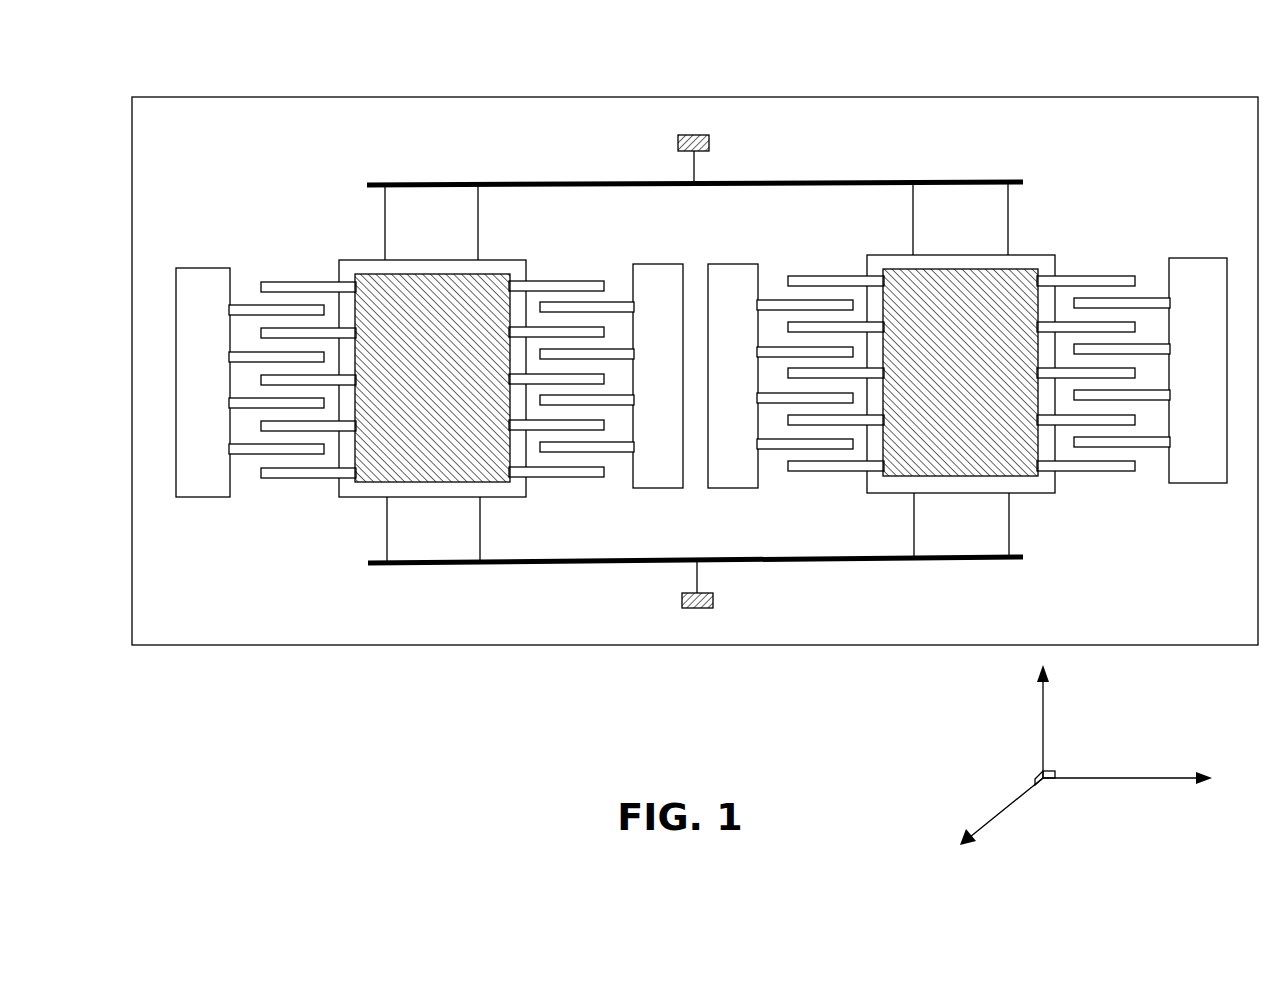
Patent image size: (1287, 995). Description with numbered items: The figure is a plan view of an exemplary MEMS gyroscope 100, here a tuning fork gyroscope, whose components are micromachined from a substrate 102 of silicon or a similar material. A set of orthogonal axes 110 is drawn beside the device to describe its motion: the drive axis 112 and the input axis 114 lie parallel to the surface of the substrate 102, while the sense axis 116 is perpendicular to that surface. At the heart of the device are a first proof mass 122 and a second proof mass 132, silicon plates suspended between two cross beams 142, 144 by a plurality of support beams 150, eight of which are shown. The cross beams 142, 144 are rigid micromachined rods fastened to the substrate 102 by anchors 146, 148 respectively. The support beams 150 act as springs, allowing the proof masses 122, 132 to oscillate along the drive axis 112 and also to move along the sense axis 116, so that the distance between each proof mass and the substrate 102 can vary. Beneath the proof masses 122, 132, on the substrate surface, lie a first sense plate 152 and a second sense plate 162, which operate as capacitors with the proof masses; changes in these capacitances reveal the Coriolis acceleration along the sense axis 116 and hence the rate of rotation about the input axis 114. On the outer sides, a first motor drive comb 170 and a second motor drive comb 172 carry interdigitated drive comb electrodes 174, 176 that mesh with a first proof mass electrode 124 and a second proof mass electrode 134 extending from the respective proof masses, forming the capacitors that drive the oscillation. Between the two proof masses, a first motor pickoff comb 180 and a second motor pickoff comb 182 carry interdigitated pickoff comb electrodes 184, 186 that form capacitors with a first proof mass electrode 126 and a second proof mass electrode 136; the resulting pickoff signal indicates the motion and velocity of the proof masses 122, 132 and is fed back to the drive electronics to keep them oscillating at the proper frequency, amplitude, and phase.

The MEMS gyroscope 100 is at (224, 76).
The substrate 102 is at (236, 172).
The set of orthogonal axes 110 is at (1061, 766).
The drive axis 112 is at (1176, 778).
The input axis 114 is at (1043, 705).
The sense axis 116 is at (1000, 812).
The first proof mass 122 is at (371, 282).
The first proof mass electrode 124 is at (302, 500).
The first proof mass electrode 126 is at (581, 492).
The second proof mass 132 is at (1009, 277).
The second proof mass electrode 134 is at (1108, 495).
The second proof mass electrode 136 is at (852, 495).
The cross beam 142 is at (814, 182).
The cross beam 144 is at (842, 561).
The anchor 146 is at (710, 143).
The anchor 148 is at (681, 599).
The support beams 150 is at (477, 226).
The first sense plate 152 is at (371, 490).
The second sense plate 162 is at (1033, 486).
The first motor drive comb 170 is at (186, 392).
The second motor drive comb 172 is at (1181, 382).
The interdigitated drive comb electrodes 174 is at (246, 285).
The interdigitated drive comb electrodes 176 is at (1150, 281).
The first motor pickoff comb 180 is at (641, 385).
The second motor pickoff comb 182 is at (716, 385).
The interdigitated pickoff comb electrodes 184 is at (618, 281).
The interdigitated pickoff comb electrodes 186 is at (770, 281).